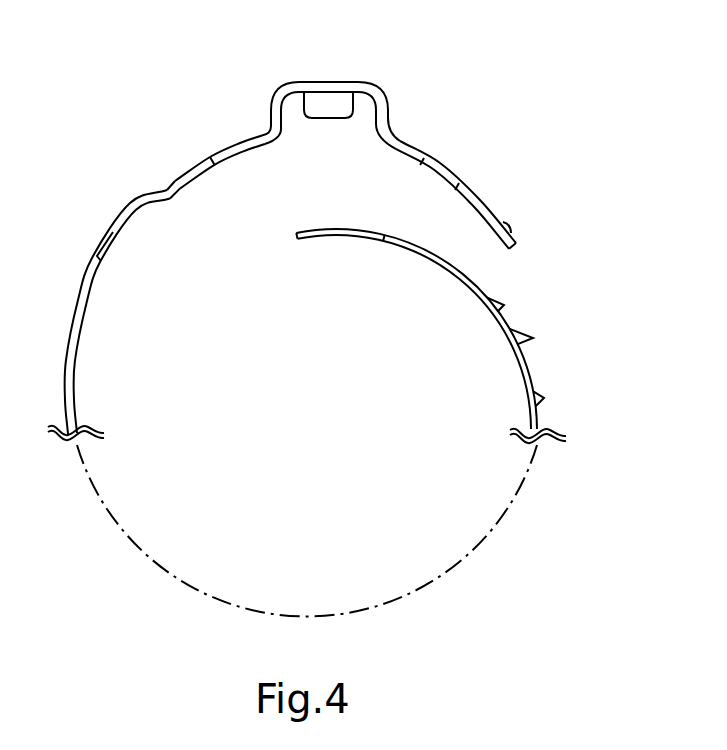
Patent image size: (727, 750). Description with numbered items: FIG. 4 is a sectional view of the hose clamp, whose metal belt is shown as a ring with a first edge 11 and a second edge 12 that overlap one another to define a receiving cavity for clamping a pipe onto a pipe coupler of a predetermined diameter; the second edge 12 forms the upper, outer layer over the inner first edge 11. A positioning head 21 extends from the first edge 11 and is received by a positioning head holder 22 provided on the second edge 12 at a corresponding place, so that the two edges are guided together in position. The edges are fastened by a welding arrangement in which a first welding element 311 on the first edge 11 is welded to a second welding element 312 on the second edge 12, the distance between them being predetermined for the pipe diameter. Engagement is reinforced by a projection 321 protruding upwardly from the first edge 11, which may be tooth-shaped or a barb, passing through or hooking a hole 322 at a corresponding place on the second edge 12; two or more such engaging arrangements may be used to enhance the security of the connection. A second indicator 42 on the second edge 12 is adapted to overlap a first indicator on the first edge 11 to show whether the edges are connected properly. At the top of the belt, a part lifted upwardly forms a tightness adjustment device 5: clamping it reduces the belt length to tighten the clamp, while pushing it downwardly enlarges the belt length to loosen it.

The tightness adjustment device 5 is at (326, 82).
The first edge 11 is at (375, 301).
The second edge 12 is at (428, 110).
The positioning head 21 is at (296, 235).
The positioning head holder 22 is at (133, 204).
The second indicator 42 is at (210, 157).
The first welding element 311 is at (544, 397).
The second welding element 312 is at (508, 228).
The projection 321 is at (504, 304).
The hole 322 is at (437, 162).